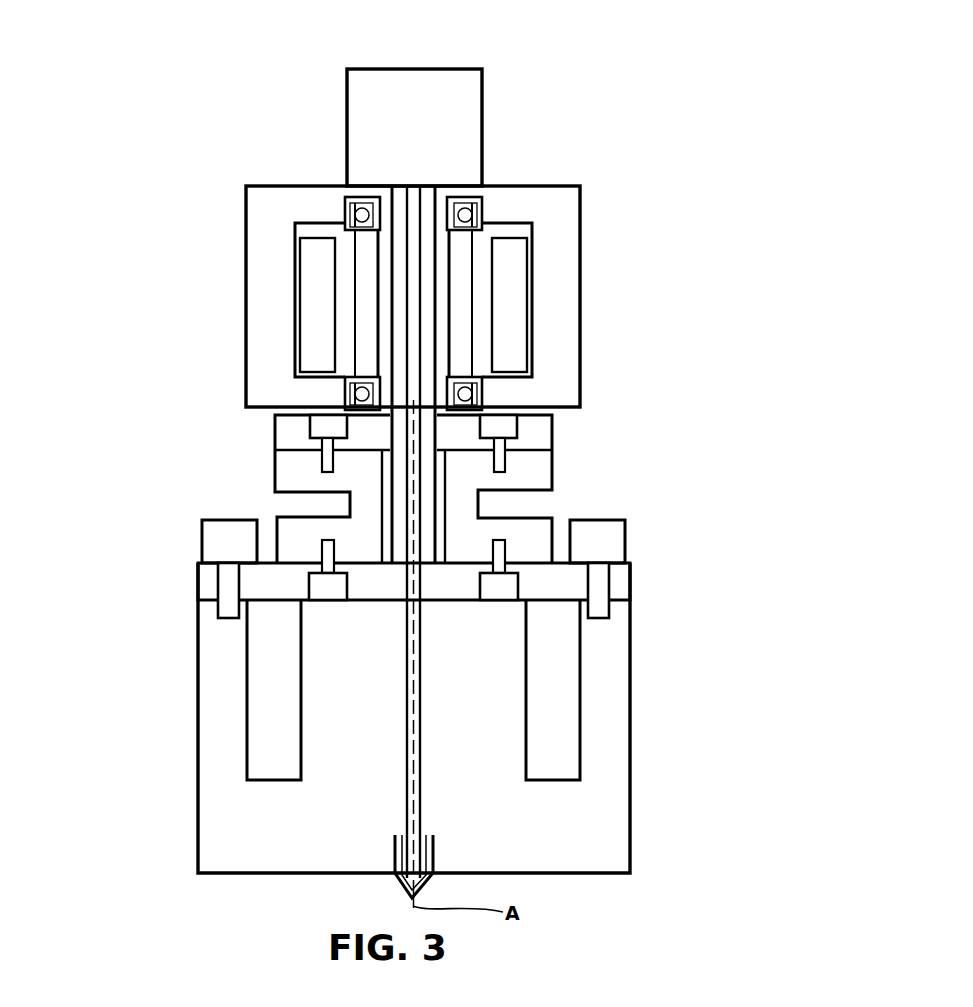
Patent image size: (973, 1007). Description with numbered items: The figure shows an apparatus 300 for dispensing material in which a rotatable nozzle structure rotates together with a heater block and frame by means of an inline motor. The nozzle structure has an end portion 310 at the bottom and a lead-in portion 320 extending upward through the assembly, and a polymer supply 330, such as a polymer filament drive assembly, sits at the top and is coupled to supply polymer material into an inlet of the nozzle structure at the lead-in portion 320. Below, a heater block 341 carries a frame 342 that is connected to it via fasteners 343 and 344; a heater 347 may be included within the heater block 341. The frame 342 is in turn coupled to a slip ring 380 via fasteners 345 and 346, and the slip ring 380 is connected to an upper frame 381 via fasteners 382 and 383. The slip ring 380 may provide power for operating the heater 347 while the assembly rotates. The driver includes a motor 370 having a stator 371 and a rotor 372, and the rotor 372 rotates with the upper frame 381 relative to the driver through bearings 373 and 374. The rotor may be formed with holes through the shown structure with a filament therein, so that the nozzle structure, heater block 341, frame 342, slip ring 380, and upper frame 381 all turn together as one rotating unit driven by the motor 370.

The apparatus 300 is at (862, 116).
The end portion 310 is at (419, 893).
The lead-in portion 320 is at (422, 769).
The polymer supply 330 is at (433, 68).
The heater block 341 is at (198, 718).
The frame 342 is at (197, 592).
The fastener 343 is at (230, 520).
The fastener 344 is at (598, 520).
The fastener 345 is at (313, 601).
The fastener 346 is at (500, 600).
The heater 347 is at (580, 722).
The motor 370 is at (581, 275).
The stator 371 is at (507, 308).
The rotor 372 is at (474, 330).
The bearing 373 is at (354, 213).
The bearing 374 is at (462, 395).
The slip ring 380 is at (273, 477).
The upper frame 381 is at (542, 448).
The fastener 382 is at (311, 435).
The fastener 383 is at (521, 431).